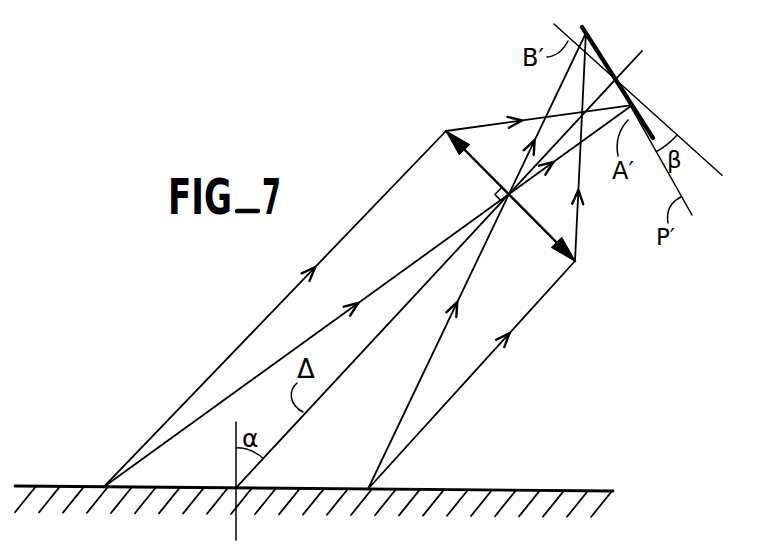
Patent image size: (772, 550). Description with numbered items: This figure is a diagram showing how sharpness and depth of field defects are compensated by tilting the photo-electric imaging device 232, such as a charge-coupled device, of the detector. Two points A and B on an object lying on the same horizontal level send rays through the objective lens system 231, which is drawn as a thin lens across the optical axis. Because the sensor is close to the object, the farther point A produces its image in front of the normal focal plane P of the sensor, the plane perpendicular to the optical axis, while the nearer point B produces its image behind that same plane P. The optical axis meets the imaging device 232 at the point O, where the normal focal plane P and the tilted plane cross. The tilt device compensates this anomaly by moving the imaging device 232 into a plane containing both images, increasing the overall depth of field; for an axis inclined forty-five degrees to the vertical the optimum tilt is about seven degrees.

The objective lens system 231 is at (470, 159).
The photo-electric imaging device 232 is at (631, 99).
The farther object point A is at (104, 486).
The nearer object point B is at (368, 488).
The axis intersection point O is at (616, 79).
The normal focal plane P is at (700, 156).